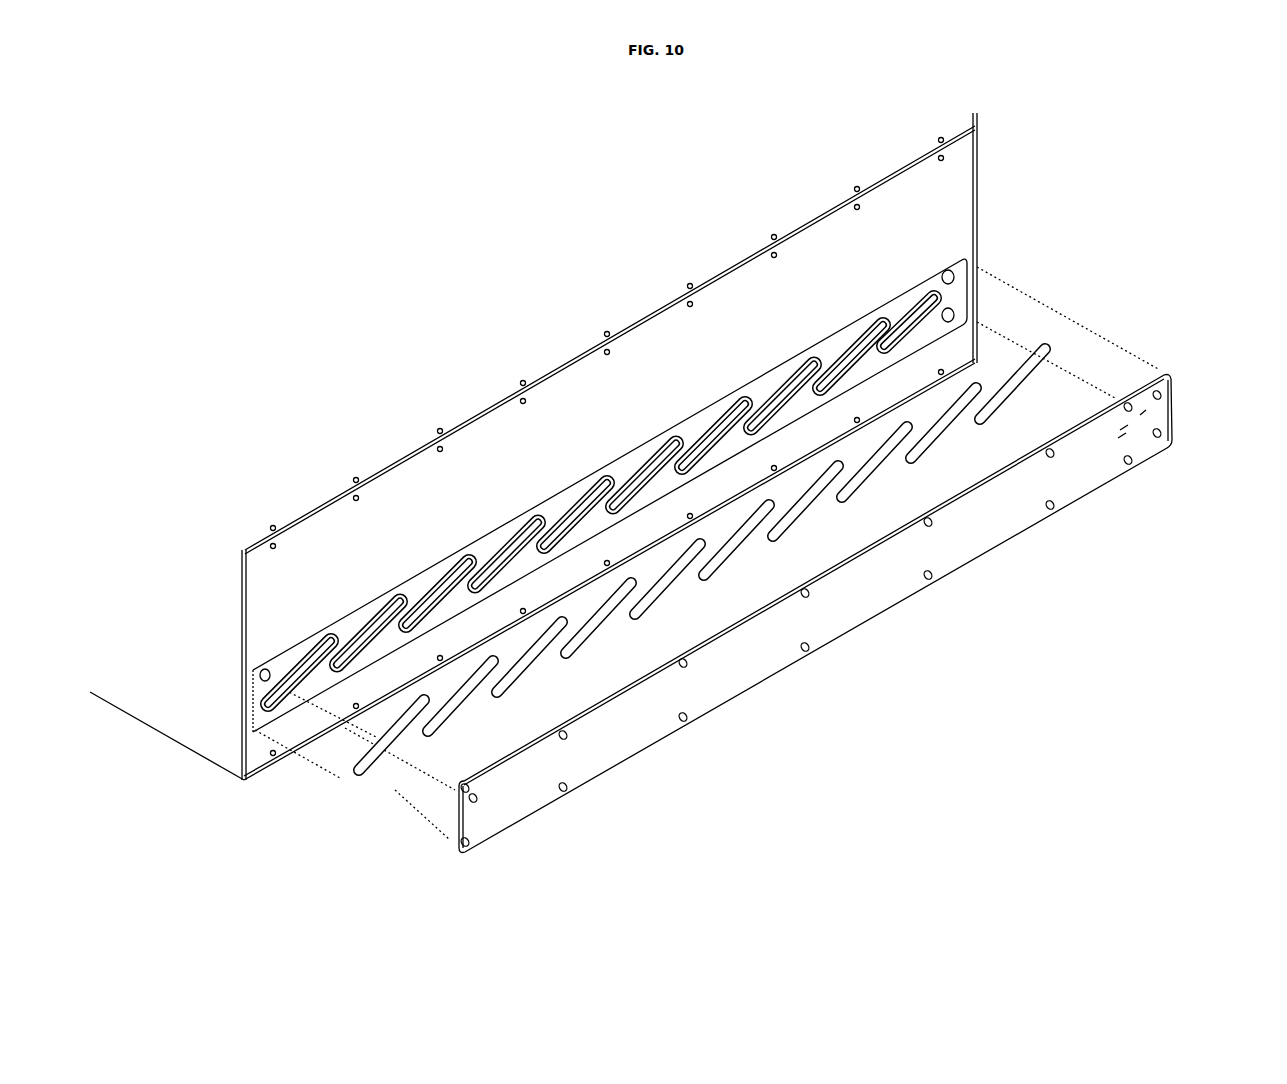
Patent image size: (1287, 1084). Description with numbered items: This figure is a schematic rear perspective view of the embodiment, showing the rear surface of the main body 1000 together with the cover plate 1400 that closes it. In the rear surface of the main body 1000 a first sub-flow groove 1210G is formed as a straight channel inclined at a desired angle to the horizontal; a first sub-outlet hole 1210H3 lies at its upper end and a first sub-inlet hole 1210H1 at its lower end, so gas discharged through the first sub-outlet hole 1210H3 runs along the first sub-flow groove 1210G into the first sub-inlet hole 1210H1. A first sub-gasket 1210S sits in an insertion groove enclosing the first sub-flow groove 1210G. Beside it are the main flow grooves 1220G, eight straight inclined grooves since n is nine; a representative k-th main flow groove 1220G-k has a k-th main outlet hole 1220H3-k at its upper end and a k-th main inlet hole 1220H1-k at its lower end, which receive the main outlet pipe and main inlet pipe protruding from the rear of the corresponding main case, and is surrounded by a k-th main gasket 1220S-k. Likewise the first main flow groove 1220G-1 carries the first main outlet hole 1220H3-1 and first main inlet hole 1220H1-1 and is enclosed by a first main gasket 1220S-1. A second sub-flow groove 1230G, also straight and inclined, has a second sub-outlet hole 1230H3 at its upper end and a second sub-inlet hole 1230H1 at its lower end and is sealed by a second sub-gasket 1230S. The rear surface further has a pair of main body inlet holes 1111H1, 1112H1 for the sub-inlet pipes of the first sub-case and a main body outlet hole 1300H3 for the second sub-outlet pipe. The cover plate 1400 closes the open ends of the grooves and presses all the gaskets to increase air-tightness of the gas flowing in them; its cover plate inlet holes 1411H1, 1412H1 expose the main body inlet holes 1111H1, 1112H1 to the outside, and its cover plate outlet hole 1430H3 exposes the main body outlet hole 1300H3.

The main body 1000 is at (655, 330).
The main flow grooves 1220G is at (567, 462).
The k-th main flow groove 1220G-k is at (557, 513).
The first main flow groove 1220G-1 is at (847, 345).
The second sub-flow groove 1230G is at (282, 648).
The first sub-flow groove 1210G is at (932, 282).
The first sub-outlet hole 1210H3 is at (957, 271).
The first sub-inlet hole 1210H1 is at (908, 352).
The first sub-gasket 1210S is at (1040, 357).
The second sub-outlet hole 1230H3 is at (312, 640).
The second sub-inlet hole 1230H1 is at (237, 712).
The second sub-gasket 1230S is at (367, 787).
The main body outlet hole 1300H3 is at (262, 676).
The k-th main outlet hole 1220H3-k is at (603, 480).
The k-th main inlet hole 1220H1-k is at (544, 560).
The k-th main gasket 1220S-k is at (570, 622).
The first main outlet hole 1220H3-1 is at (880, 318).
The first main inlet hole 1220H1-1 is at (809, 398).
The first main gasket 1220S-1 is at (915, 438).
The 1-2nd main body inlet hole 1112H1 is at (965, 250).
The 1-1st main body inlet hole 1111H1 is at (968, 298).
The cover plate 1400 is at (869, 585).
The cover plate outlet hole 1430H3 is at (480, 795).
The 1-2nd cover plate inlet hole 1412H1 is at (1157, 390).
The 1-1st cover plate inlet hole 1411H1 is at (1166, 434).